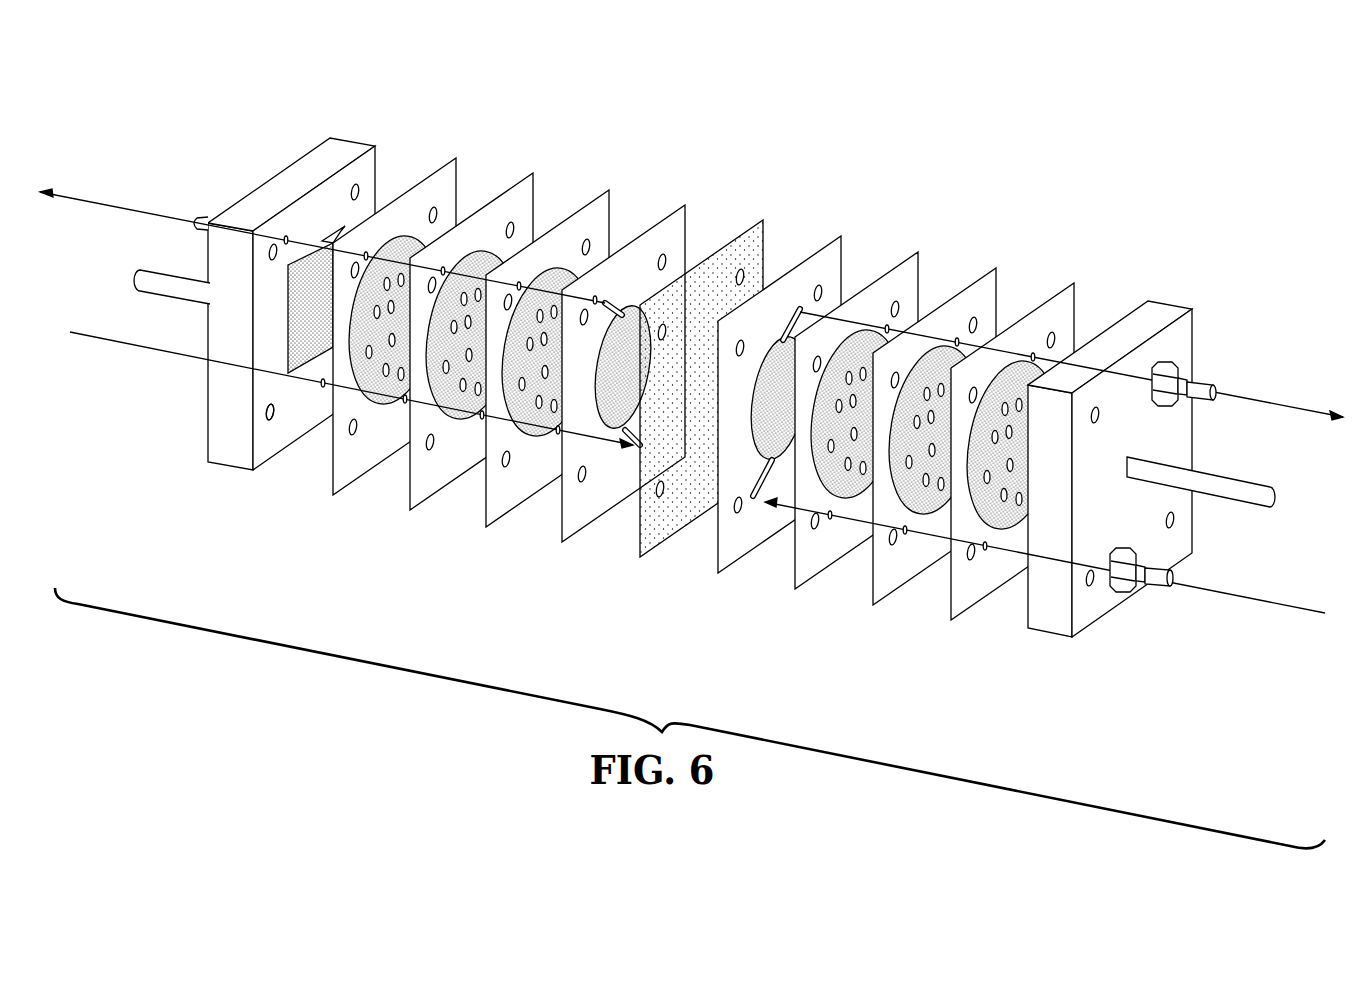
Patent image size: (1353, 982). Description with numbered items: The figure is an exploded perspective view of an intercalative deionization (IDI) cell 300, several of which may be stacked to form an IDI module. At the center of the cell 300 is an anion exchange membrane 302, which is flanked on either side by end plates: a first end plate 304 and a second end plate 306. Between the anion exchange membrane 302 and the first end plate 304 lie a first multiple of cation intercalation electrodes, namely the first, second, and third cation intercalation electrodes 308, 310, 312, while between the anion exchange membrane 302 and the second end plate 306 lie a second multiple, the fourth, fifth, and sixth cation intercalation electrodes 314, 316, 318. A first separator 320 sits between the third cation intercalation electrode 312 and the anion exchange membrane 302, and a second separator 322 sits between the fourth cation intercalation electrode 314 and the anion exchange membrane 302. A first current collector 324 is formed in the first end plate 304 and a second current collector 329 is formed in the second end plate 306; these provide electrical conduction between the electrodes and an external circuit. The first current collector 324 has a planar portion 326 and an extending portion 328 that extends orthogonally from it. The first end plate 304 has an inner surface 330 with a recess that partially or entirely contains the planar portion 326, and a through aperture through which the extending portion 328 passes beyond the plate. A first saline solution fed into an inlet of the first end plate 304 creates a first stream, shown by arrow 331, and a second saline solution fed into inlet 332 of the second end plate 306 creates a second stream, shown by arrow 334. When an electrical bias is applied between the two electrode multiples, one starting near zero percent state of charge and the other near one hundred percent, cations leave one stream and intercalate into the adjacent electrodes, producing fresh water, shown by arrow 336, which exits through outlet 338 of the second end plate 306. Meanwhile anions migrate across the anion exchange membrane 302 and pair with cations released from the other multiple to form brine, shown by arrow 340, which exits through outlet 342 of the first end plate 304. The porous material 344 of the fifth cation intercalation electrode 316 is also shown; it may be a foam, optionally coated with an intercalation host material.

The IDI cell 300 is at (691, 369).
The anion exchange membrane 302 is at (749, 232).
The first end plate 304 is at (335, 150).
The second end plate 306 is at (1153, 313).
The first cation intercalation electrode 308 is at (448, 168).
The second cation intercalation electrode 310 is at (518, 182).
The third cation intercalation electrode 312 is at (595, 200).
The fourth cation intercalation electrode 314 is at (902, 264).
The fifth cation intercalation electrode 316 is at (980, 280).
The sixth cation intercalation electrode 318 is at (1057, 296).
The first separator 320 is at (672, 216).
The second separator 322 is at (825, 248).
The first current collector 324 is at (328, 233).
The planar portion 326 is at (300, 342).
The extending portion 328 is at (133, 280).
The second current collector 329 is at (1220, 470).
The inner surface 330 is at (263, 437).
The arrow 331 is at (140, 355).
The inlet 332 is at (1158, 596).
The arrow 334 is at (1233, 590).
The arrow 336 is at (1273, 400).
The outlet 338 is at (1202, 373).
The arrow 340 is at (137, 213).
The outlet 342 is at (203, 215).
The porous material 344 is at (893, 495).